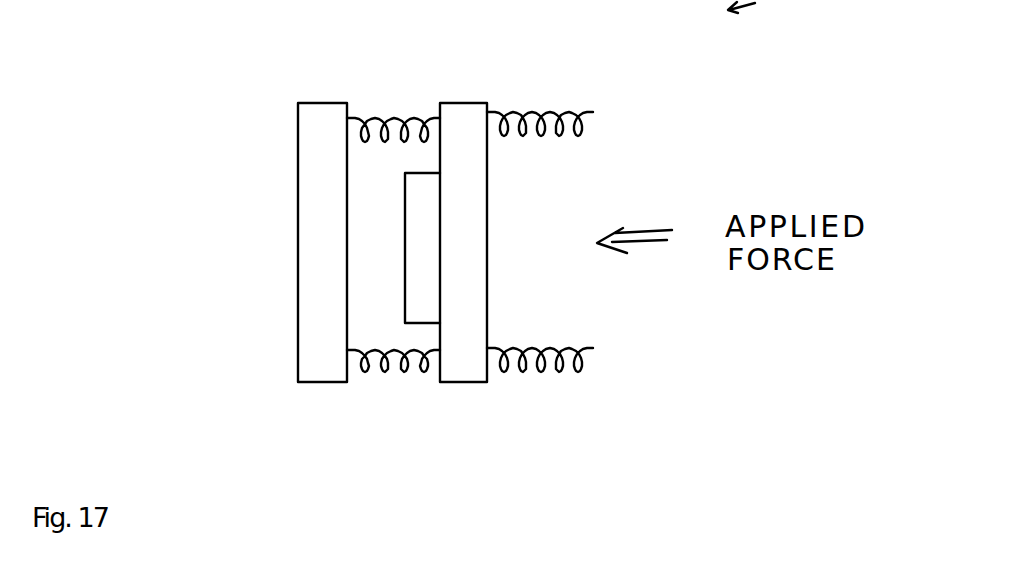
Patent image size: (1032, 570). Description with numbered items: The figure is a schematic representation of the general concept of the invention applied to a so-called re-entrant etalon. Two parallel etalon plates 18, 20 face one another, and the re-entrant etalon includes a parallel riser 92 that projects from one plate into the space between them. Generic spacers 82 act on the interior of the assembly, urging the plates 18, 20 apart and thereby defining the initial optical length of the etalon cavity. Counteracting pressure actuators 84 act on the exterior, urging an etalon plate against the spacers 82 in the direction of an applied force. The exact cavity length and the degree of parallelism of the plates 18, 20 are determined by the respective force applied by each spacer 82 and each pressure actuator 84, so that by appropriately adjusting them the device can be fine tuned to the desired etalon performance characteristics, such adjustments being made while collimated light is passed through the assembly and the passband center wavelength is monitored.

The etalon plate 18 is at (314, 125).
The etalon plate 20 is at (462, 123).
The spacers 82 is at (405, 114).
The pressure actuators 84 is at (592, 102).
The parallel riser 92 is at (418, 291).